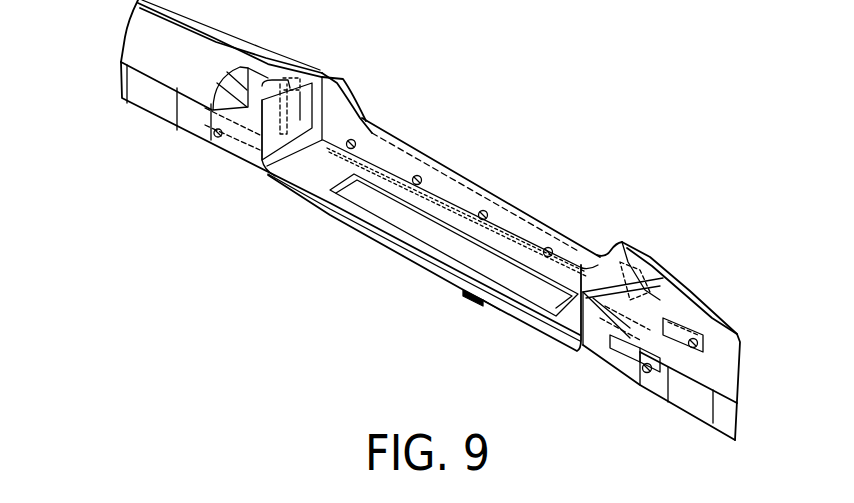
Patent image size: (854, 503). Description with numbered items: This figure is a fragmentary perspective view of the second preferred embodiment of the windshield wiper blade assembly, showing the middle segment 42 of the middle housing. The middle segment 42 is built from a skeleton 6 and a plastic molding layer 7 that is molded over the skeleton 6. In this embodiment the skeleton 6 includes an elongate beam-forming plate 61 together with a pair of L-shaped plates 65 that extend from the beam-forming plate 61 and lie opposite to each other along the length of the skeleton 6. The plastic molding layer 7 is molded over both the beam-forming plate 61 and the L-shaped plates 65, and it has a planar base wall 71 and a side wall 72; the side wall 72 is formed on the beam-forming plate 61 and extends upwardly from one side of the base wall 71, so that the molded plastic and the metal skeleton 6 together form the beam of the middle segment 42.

The middle segment 42 is at (608, 223).
The plastic molding layer 7 is at (344, 76).
The beam-forming plate 61 is at (417, 144).
The skeleton 6 is at (487, 196).
The side wall 72 is at (568, 232).
The planar base wall 71 is at (317, 173).
The L-shaped plates 65 is at (232, 150).